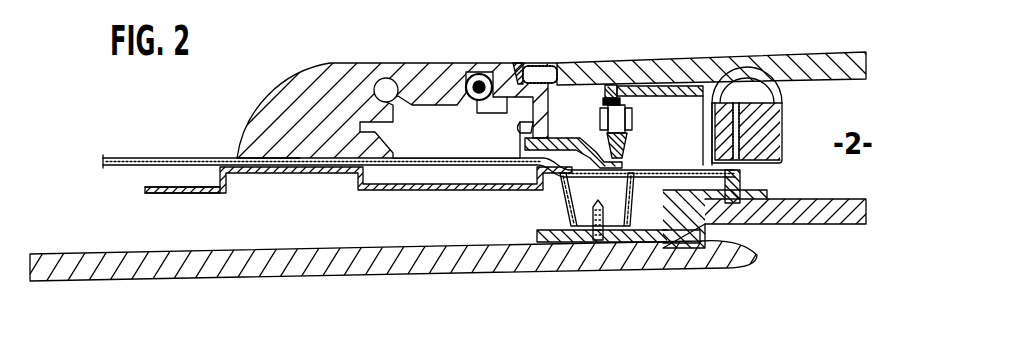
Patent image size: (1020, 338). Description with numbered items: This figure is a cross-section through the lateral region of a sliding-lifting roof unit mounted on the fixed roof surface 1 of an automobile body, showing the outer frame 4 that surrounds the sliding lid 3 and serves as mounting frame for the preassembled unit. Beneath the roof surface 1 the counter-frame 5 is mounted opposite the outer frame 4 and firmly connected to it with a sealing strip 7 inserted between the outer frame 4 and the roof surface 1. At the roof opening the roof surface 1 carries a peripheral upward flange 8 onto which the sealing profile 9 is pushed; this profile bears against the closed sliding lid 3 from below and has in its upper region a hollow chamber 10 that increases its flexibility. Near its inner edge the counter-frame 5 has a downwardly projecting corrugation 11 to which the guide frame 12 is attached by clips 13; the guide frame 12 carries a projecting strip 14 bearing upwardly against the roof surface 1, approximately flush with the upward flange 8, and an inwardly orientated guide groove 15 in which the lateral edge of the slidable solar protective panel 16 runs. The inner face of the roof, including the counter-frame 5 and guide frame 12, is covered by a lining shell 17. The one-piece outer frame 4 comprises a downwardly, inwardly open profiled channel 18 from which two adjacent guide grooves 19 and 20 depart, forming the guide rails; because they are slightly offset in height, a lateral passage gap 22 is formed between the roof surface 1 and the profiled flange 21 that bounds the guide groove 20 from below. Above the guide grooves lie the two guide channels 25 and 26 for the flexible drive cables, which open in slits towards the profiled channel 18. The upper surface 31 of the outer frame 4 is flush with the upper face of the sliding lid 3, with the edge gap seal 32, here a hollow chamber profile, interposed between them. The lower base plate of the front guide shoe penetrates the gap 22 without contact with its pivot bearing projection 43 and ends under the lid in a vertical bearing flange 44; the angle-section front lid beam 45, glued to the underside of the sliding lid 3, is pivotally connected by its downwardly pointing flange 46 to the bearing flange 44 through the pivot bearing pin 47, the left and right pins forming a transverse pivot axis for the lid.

The fixed roof surface 1 is at (142, 157).
The sliding lid 3 is at (803, 53).
The outer frame 4 is at (330, 63).
The counter-frame 5 is at (150, 193).
The sealing strip 7 is at (236, 156).
The upward flange 8 is at (781, 128).
The sealing profile 9 is at (781, 156).
The hollow chamber 10 is at (765, 95).
The corrugation 11 is at (561, 203).
The guide frame 12 is at (542, 237).
The clips 13 is at (590, 266).
The projecting strip 14 is at (741, 183).
The guide groove 15 is at (667, 248).
The solar protective panel 16 is at (823, 208).
The lining shell 17 is at (399, 273).
The profiled channel 18 is at (431, 115).
The guide groove 19 is at (333, 172).
The guide groove 20 is at (513, 108).
The profiled flange 21 is at (517, 121).
The lateral passage gap 22 is at (558, 125).
The guide channel 25 is at (388, 78).
The guide channel 26 is at (479, 73).
The upper surface 31 is at (516, 62).
The edge gap seal 32 is at (538, 65).
The pivot bearing projection 43 is at (603, 97).
The bearing flange 44 is at (619, 86).
The front lid beam 45 is at (698, 62).
The downwardly pointing flange 46 is at (628, 151).
The pivot bearing pin 47 is at (626, 120).